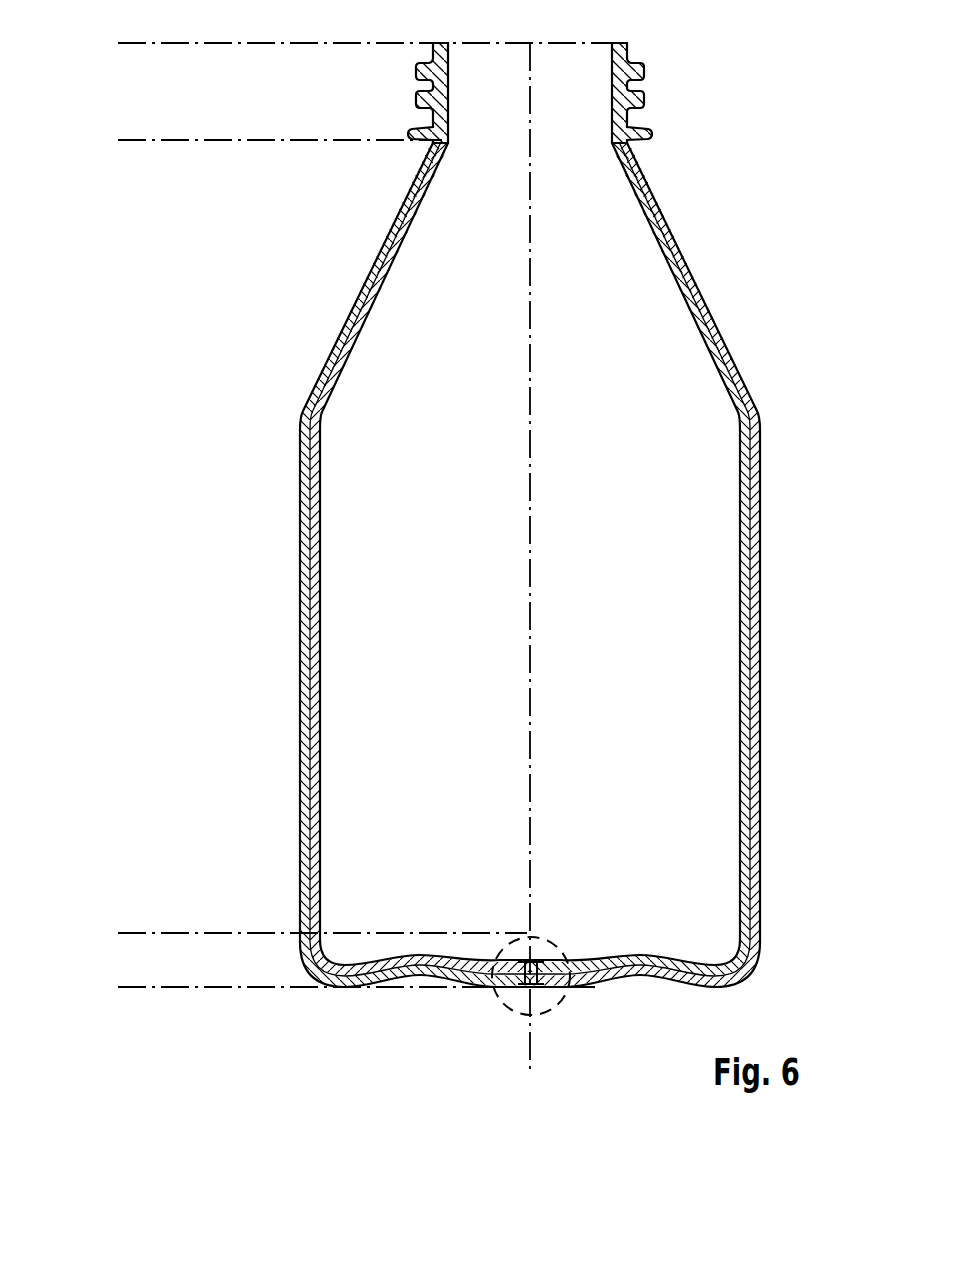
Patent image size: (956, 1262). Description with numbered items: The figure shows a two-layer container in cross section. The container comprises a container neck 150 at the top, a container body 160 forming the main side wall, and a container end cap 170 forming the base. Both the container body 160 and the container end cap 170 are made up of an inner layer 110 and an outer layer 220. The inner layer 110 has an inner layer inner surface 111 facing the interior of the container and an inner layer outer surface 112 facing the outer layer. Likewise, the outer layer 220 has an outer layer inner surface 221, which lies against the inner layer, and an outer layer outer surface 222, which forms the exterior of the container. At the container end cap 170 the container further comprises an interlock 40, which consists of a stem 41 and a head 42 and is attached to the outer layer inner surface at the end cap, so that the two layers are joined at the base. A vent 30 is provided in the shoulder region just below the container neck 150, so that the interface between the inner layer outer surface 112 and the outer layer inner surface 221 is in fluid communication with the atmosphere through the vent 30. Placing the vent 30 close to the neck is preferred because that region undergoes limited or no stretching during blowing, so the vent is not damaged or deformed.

The vent 30 is at (420, 170).
The interlock 40 is at (565, 1002).
The stem 41 is at (497, 987).
The head 42 is at (538, 960).
The inner layer 110 is at (741, 467).
The inner layer inner surface 111 is at (740, 556).
The inner layer outer surface 112 is at (760, 535).
The container neck 150 is at (118, 43).
The container body 160 is at (118, 933).
The container end cap 170 is at (118, 933).
The outer layer 220 is at (305, 545).
The outer layer inner surface 221 is at (320, 626).
The outer layer outer surface 222 is at (300, 632).